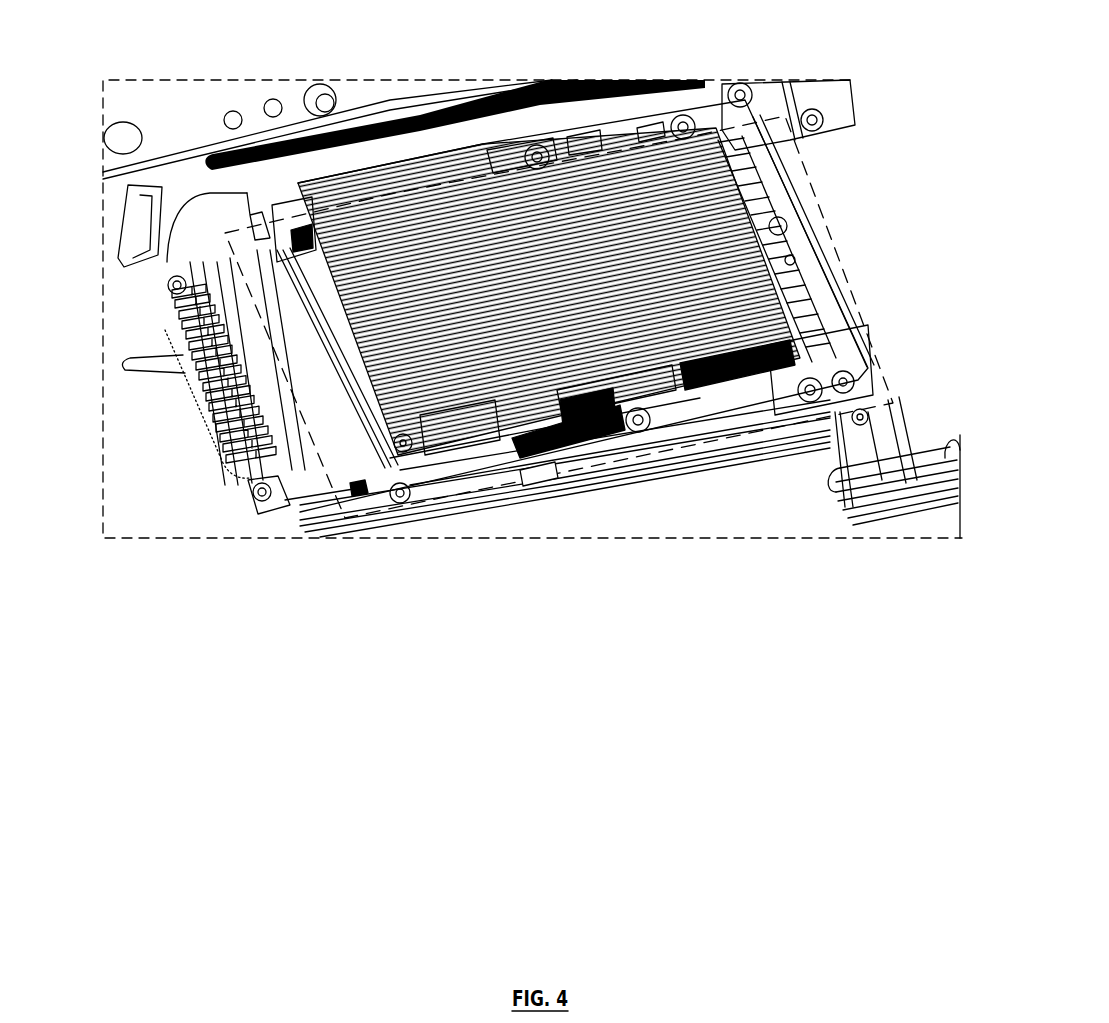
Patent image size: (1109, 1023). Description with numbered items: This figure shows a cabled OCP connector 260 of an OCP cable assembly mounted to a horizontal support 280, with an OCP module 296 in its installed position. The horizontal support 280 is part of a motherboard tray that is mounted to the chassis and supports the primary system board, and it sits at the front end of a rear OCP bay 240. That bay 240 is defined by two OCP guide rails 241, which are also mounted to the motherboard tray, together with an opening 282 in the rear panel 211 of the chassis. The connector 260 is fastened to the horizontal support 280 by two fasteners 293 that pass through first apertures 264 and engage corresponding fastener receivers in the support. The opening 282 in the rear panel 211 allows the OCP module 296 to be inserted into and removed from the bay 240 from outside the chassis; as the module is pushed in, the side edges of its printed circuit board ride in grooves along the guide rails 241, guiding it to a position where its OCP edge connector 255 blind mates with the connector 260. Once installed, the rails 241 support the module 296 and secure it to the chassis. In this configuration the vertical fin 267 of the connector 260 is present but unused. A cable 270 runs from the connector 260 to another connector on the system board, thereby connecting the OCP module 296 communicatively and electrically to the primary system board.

The OCP guide rail 241 is at (265, 232).
The OCP module 296 is at (447, 253).
The rear OCP bay 240 is at (813, 197).
The opening 282 is at (880, 263).
The rear panel 211 is at (947, 440).
The fastener 293 is at (170, 288).
The cable 270 is at (183, 388).
The horizontal support 280 is at (130, 508).
The first aperture 264 is at (258, 496).
The vertical fin 267 is at (294, 466).
The OCP edge connector 255 is at (356, 497).
The cabled OCP connector 260 is at (322, 517).